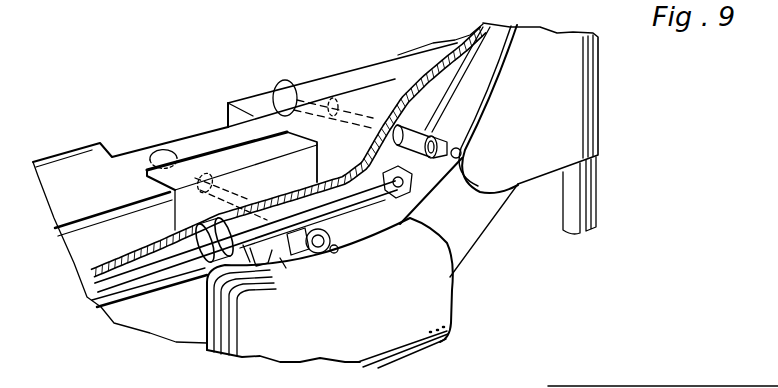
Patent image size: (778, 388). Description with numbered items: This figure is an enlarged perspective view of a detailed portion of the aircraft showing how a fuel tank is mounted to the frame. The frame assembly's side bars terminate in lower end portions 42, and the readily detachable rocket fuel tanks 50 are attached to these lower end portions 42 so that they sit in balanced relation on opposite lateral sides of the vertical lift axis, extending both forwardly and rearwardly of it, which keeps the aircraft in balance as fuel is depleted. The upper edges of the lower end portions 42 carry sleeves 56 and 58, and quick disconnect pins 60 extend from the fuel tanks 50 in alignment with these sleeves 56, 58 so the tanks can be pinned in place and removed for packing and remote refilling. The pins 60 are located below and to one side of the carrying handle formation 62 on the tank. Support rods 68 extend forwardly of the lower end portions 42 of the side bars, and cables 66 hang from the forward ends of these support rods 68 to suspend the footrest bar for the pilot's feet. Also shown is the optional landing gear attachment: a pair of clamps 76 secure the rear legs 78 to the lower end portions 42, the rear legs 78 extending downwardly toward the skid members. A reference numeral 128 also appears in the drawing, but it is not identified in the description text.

The lower end portions 42 is at (452, 245).
The fuel tanks 50 is at (85, 163).
The sleeve 56 is at (313, 260).
The sleeve 58 is at (420, 128).
The quick disconnect pins 60 is at (463, 128).
The carrying handle formation 62 is at (205, 140).
The cables 66 is at (417, 307).
The support rods 68 is at (166, 259).
The clamps 76 is at (573, 118).
The rear legs 78 is at (577, 205).
The frame member 128 is at (247, 5).